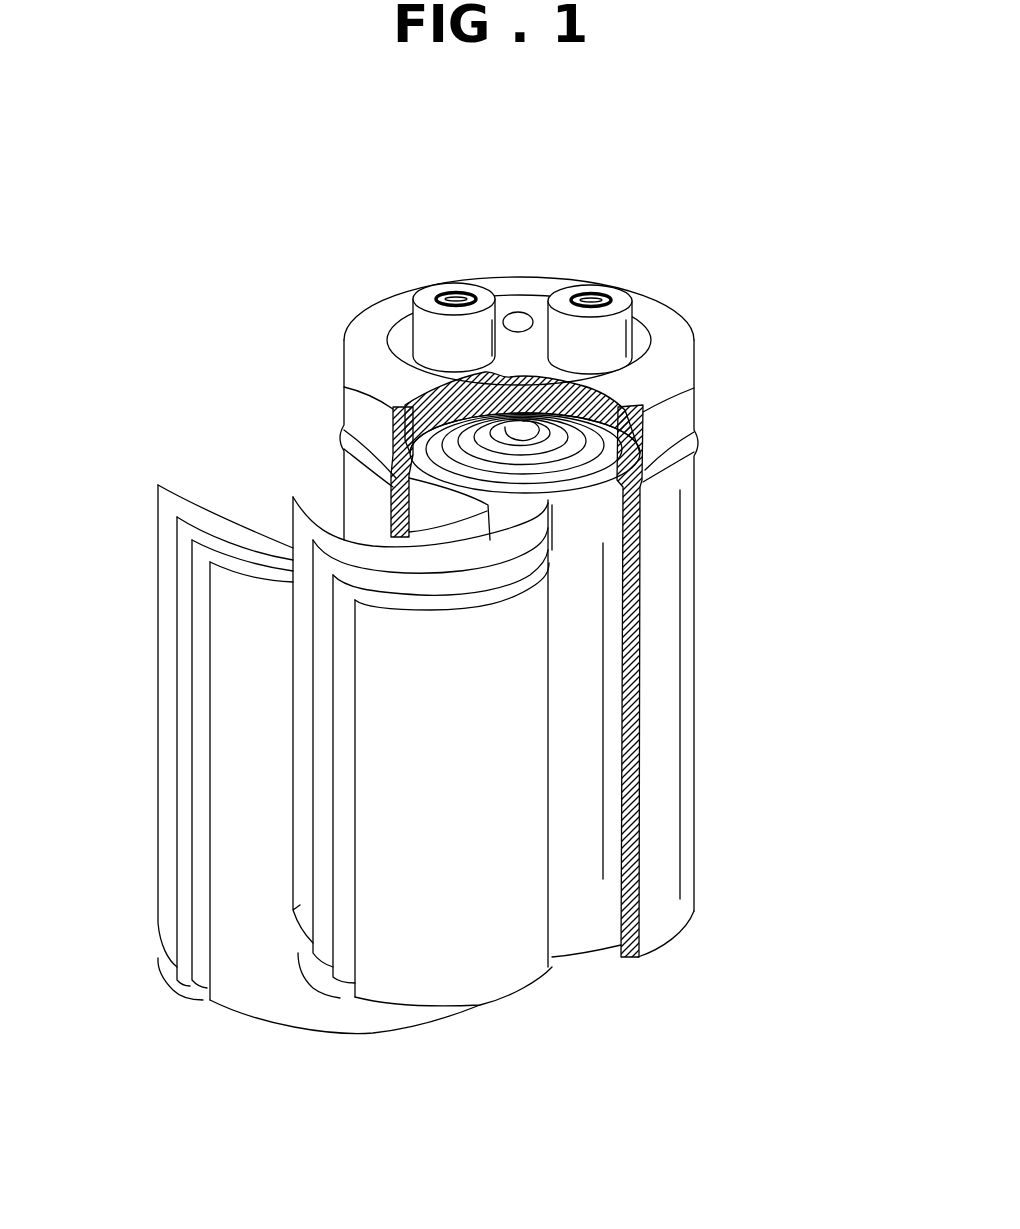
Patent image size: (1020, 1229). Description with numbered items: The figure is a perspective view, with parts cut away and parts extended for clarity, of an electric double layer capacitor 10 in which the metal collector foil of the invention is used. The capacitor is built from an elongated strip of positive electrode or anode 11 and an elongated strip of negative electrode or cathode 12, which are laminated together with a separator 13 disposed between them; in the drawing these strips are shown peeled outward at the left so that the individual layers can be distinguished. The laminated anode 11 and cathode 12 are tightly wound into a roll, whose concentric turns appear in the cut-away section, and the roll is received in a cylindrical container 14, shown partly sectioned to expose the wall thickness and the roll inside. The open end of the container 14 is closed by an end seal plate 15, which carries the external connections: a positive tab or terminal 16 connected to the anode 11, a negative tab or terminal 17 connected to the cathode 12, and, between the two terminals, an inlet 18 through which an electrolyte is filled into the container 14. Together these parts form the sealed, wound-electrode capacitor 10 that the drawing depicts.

The electric double layer capacitor 10 is at (743, 253).
The positive electrode or anode 11 is at (173, 990).
The negative electrode or cathode 12 is at (313, 988).
The separator 13 is at (297, 913).
The cylindrical container 14 is at (661, 605).
The end seal plate 15 is at (402, 367).
The positive tab or terminal 16 is at (455, 297).
The negative tab or terminal 17 is at (593, 299).
The inlet 18 is at (517, 312).